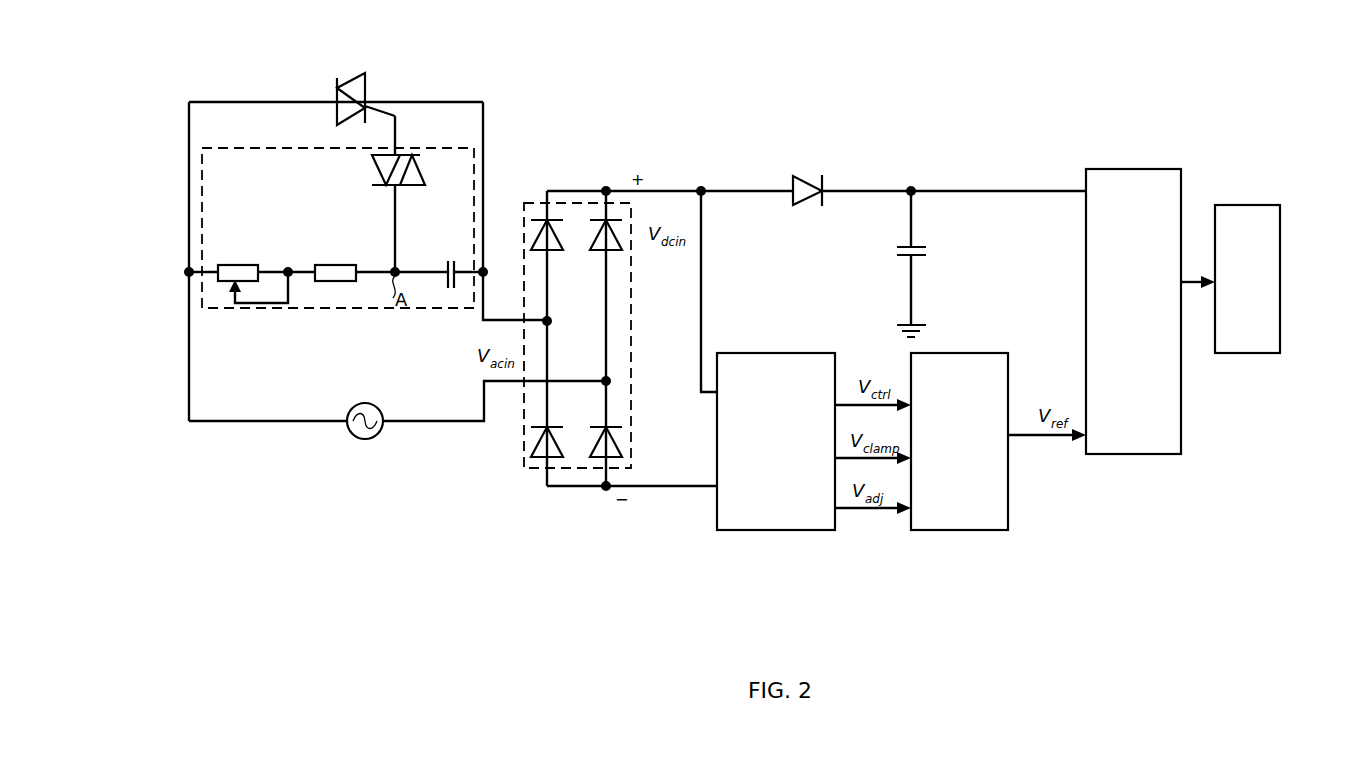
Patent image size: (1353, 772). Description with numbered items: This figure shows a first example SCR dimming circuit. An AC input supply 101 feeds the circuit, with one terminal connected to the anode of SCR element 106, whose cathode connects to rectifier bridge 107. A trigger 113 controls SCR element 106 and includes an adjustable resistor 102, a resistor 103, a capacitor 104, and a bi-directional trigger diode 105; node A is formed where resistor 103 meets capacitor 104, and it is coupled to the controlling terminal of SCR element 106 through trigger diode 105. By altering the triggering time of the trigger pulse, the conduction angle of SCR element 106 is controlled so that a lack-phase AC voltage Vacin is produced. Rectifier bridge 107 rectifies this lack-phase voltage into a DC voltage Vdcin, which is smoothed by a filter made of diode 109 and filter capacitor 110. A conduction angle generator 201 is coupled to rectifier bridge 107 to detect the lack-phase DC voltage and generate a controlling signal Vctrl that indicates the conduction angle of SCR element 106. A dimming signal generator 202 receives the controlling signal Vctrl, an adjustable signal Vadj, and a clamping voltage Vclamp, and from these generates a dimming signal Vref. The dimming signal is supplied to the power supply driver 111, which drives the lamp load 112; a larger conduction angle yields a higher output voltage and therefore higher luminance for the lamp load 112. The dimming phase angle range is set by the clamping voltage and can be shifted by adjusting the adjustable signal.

The AC input supply 101 is at (358, 404).
The adjustable resistor 102 is at (240, 272).
The resistor 103 is at (339, 272).
The capacitor 104 is at (447, 266).
The bi-directional trigger diode 105 is at (417, 177).
The SCR element 106 is at (351, 82).
The rectifier bridge 107 is at (631, 351).
The diode 109 is at (800, 178).
The filter capacitor 110 is at (927, 257).
The power supply driver 111 is at (1151, 336).
The lamp load 112 is at (1262, 304).
The trigger 113 is at (241, 178).
The conduction angle generator 201 is at (793, 495).
The dimming signal generator 202 is at (977, 495).